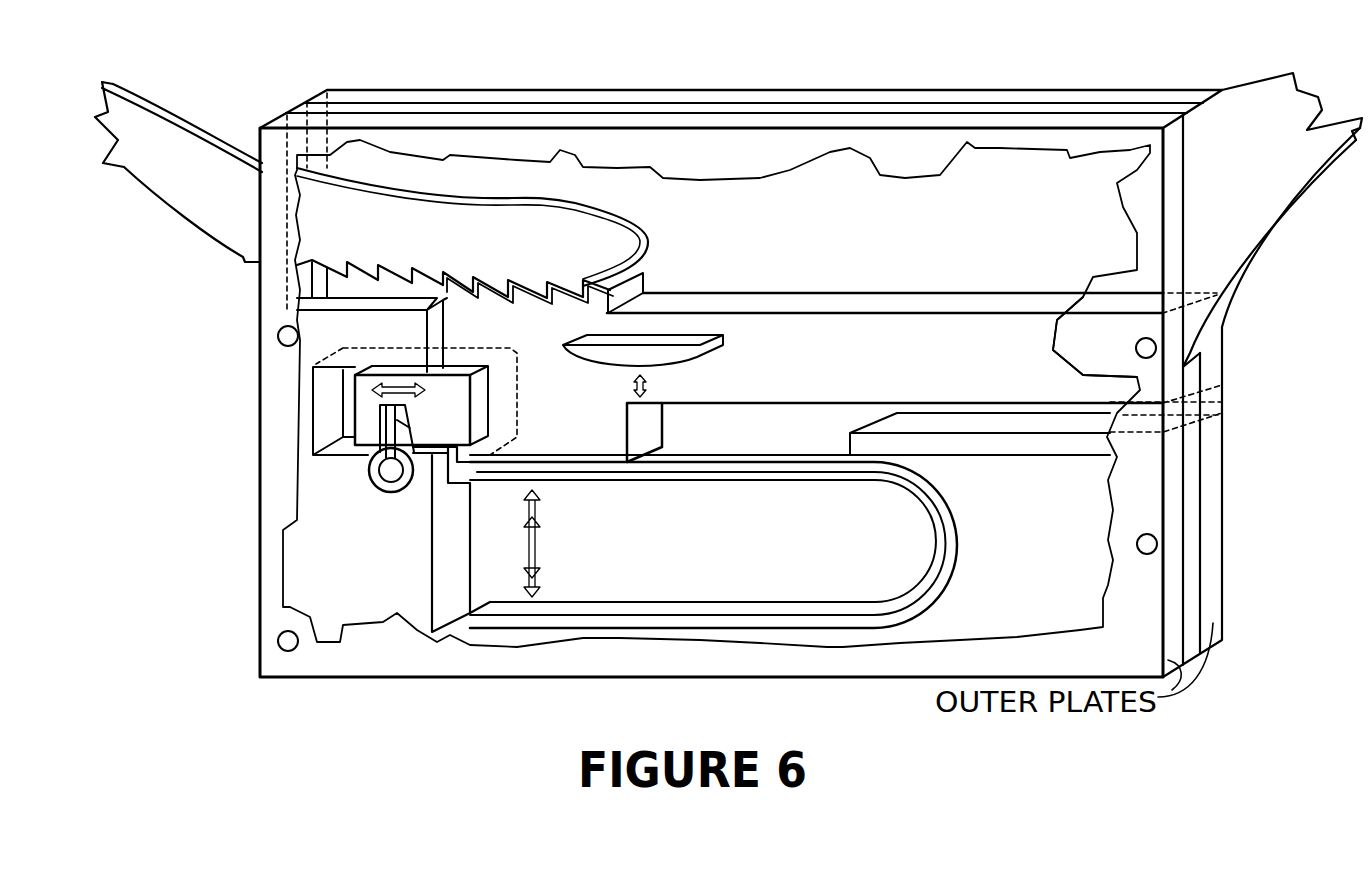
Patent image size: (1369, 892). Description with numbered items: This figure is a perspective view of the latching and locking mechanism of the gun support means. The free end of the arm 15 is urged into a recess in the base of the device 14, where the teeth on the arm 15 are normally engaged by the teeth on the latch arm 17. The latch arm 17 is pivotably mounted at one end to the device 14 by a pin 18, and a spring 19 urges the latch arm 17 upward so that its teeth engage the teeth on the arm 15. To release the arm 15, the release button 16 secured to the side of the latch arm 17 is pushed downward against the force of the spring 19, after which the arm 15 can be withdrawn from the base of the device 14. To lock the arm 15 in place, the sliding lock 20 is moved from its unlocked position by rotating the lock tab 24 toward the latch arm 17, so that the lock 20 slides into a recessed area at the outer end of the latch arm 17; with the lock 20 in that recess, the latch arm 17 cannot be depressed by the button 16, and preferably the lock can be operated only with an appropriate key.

The device 14 is at (1267, 188).
The arm 15 is at (197, 148).
The release button 16 is at (723, 348).
The latch arm 17 is at (823, 307).
The pin 18 is at (1150, 340).
The spring 19 is at (720, 483).
The sliding lock 20 is at (505, 388).
The lock tab 24 is at (373, 490).